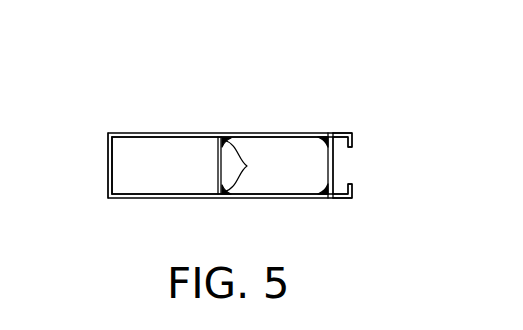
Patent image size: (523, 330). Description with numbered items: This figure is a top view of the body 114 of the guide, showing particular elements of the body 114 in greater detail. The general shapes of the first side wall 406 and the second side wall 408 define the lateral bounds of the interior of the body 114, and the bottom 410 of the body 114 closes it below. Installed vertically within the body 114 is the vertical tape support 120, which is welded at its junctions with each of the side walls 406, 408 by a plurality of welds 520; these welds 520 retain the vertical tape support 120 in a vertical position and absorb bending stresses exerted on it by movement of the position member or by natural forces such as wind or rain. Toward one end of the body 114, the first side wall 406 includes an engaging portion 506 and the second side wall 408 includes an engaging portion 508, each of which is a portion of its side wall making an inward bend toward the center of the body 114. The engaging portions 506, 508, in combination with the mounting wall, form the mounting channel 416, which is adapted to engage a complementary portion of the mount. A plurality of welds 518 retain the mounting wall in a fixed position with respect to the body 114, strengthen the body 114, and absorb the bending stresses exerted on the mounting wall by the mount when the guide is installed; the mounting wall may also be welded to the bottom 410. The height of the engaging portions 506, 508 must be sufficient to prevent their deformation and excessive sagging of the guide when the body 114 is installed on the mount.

The body 114 is at (186, 134).
The vertical tape support 120 is at (216, 160).
The first side wall 406 is at (148, 133).
The second side wall 408 is at (140, 198).
The bottom 410 is at (107, 162).
The mounting channel 416 is at (340, 167).
The engaging portion 506 is at (353, 145).
The engaging portion 508 is at (353, 190).
The welds 518 is at (324, 139).
The welds 520 is at (252, 166).